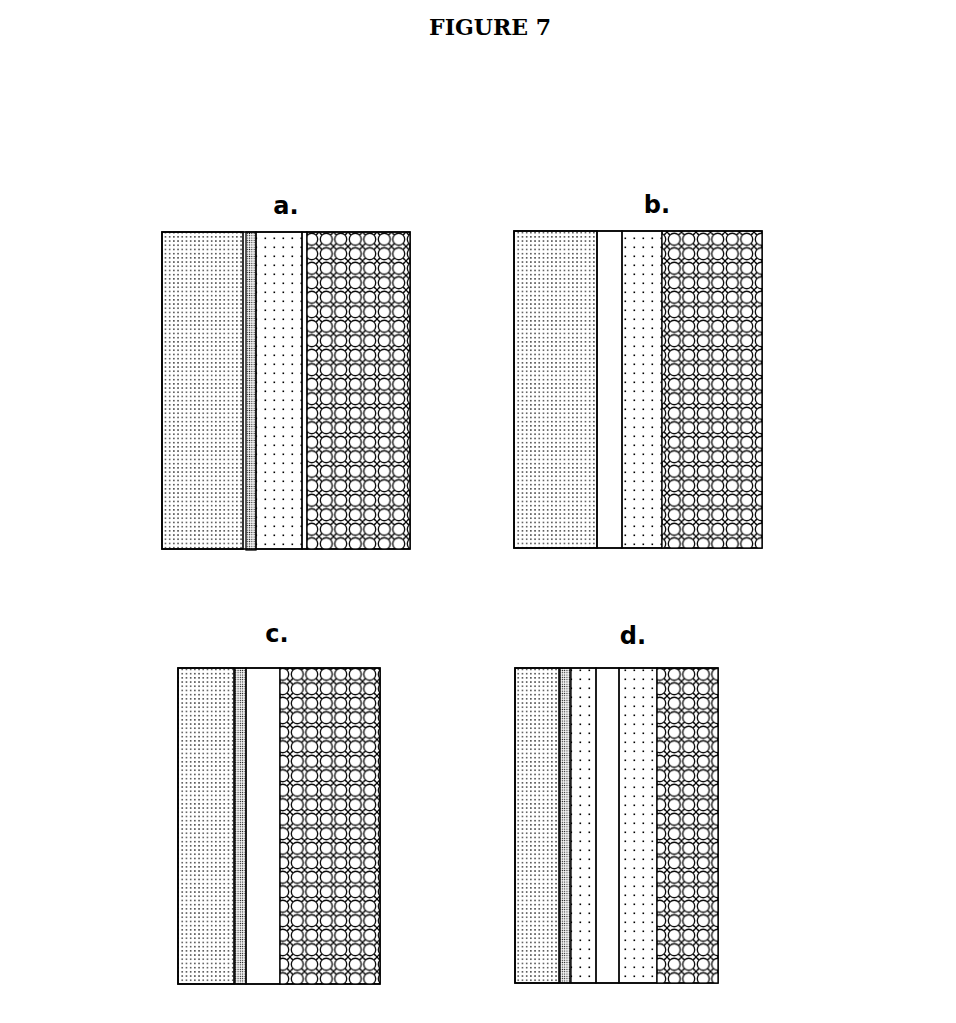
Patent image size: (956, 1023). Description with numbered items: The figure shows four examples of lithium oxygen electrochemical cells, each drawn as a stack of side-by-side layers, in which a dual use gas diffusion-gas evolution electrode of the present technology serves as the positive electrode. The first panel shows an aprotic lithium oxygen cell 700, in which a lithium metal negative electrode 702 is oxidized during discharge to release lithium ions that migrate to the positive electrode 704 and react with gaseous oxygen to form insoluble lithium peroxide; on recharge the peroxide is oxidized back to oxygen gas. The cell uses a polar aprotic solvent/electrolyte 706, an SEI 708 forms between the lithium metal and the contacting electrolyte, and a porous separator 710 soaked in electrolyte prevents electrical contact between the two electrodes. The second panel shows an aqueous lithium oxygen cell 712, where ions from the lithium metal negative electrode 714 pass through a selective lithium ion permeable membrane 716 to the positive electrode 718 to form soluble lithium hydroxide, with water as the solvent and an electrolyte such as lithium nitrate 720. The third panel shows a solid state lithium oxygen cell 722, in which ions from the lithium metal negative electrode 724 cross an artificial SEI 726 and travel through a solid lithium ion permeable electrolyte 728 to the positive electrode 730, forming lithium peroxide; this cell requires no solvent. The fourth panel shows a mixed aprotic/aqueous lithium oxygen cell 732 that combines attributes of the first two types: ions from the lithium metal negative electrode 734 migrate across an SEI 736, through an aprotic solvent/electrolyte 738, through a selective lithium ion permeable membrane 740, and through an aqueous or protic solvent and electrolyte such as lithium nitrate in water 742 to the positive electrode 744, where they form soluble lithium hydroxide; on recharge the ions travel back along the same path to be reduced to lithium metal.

The aprotic lithium oxygen cell 700 is at (255, 358).
The lithium metal negative electrode 702 is at (200, 303).
The positive electrode 704 is at (340, 435).
The solvent/electrolyte 706 is at (282, 362).
The SEI 708 is at (250, 348).
The porous separator 710 is at (305, 418).
The aqueous lithium oxygen cell 712 is at (702, 359).
The lithium metal negative electrode 714 is at (560, 283).
The selective lithium ion permeable membrane 716 is at (612, 320).
The positive electrode 718 is at (710, 390).
The lithium nitrate electrolyte 720 is at (635, 360).
The solid state lithium oxygen cell 722 is at (225, 793).
The lithium metal negative electrode 724 is at (193, 730).
The artificial SEI 726 is at (243, 803).
The solid lithium ion permeable electrolyte 728 is at (258, 870).
The positive electrode 730 is at (300, 932).
The mixed aprotic/aqueous lithium oxygen cell 732 is at (686, 792).
The lithium metal negative electrode 734 is at (538, 710).
The SEI 736 is at (568, 756).
The aprotic solvent/electrolyte 738 is at (587, 795).
The selective lithium ion permeable membrane 740 is at (605, 843).
The aqueous or protic solvent and electrolyte 742 is at (637, 888).
The positive electrode 744 is at (685, 942).